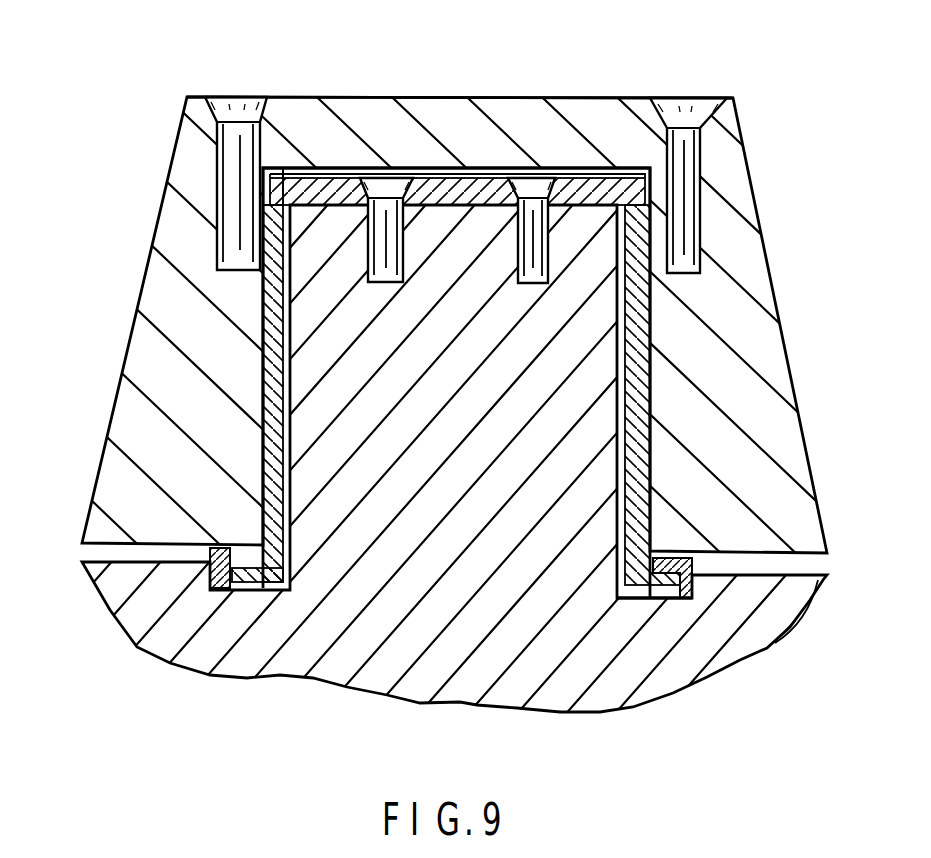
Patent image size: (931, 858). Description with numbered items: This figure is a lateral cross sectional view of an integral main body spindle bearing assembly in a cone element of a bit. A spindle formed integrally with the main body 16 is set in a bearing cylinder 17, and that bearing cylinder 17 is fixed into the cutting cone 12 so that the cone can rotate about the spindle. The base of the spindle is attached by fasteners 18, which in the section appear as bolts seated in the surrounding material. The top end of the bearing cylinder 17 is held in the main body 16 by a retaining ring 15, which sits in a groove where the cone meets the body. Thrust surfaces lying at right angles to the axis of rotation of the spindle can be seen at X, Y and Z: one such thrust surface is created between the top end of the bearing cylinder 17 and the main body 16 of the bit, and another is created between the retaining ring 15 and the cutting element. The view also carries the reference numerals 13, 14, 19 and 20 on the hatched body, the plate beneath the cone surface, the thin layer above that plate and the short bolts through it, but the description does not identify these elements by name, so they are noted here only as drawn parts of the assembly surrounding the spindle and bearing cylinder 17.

The cutting cone 12 is at (204, 335).
The mold body section 13 is at (342, 133).
The insert plate 14 is at (613, 192).
The retaining ring 15 is at (690, 586).
The main body 16 is at (519, 660).
The bearing cylinder 17 is at (638, 401).
The fasteners 18 is at (230, 160).
The liner top layer 19 is at (567, 170).
The plate bolt 20 is at (383, 250).
The thrust surface X is at (208, 552).
The thrust surface Y is at (648, 594).
The thrust surface Z is at (272, 195).